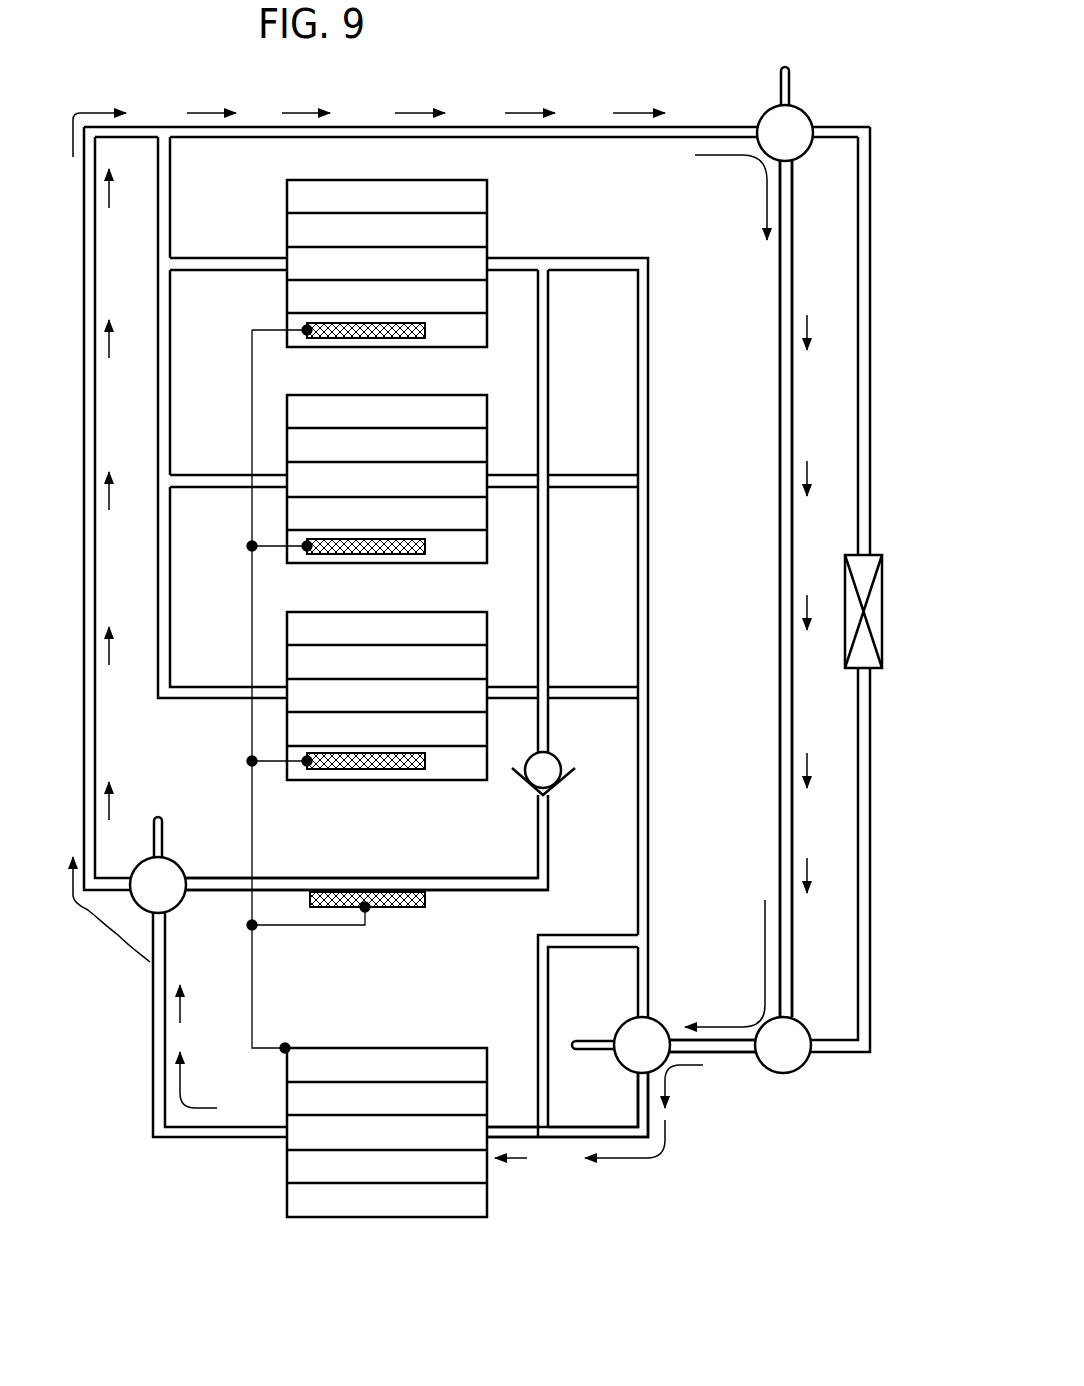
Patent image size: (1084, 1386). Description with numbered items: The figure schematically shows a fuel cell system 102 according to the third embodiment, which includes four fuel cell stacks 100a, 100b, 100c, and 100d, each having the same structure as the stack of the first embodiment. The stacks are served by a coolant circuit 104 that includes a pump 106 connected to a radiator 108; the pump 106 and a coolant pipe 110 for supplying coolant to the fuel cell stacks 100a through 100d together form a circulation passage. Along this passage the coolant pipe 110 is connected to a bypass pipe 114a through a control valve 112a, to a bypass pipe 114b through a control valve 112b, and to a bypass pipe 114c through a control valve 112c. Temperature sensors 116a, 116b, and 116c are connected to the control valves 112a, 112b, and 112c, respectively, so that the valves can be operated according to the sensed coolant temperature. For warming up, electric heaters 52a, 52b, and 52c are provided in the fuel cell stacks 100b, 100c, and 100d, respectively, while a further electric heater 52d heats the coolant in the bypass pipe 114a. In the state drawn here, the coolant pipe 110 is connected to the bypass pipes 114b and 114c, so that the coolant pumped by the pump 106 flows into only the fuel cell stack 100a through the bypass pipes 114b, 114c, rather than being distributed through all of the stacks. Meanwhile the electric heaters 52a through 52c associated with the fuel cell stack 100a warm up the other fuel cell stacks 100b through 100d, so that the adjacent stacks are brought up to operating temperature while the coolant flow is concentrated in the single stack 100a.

The fuel cell stack 100a is at (344, 1046).
The fuel cell stack 100b is at (419, 611).
The fuel cell stack 100c is at (419, 394).
The fuel cell stack 100d is at (421, 178).
The electric heater 52a is at (428, 762).
The electric heater 52b is at (428, 546).
The electric heater 52c is at (428, 332).
The electric heater 52d is at (399, 911).
The fuel cell system 102 is at (627, 97).
The coolant circuit 104 is at (752, 1132).
The pump 106 is at (784, 1074).
The radiator 108 is at (884, 592).
The coolant pipe 110 is at (723, 1054).
The control valve 112a is at (180, 865).
The control valve 112b is at (665, 1019).
The control valve 112c is at (762, 119).
The bypass pipe 114a is at (210, 892).
The bypass pipe 114b is at (592, 1126).
The bypass pipe 114c is at (780, 423).
The temperature sensor 116a is at (159, 816).
The temperature sensor 116b is at (591, 1039).
The temperature sensor 116c is at (794, 83).